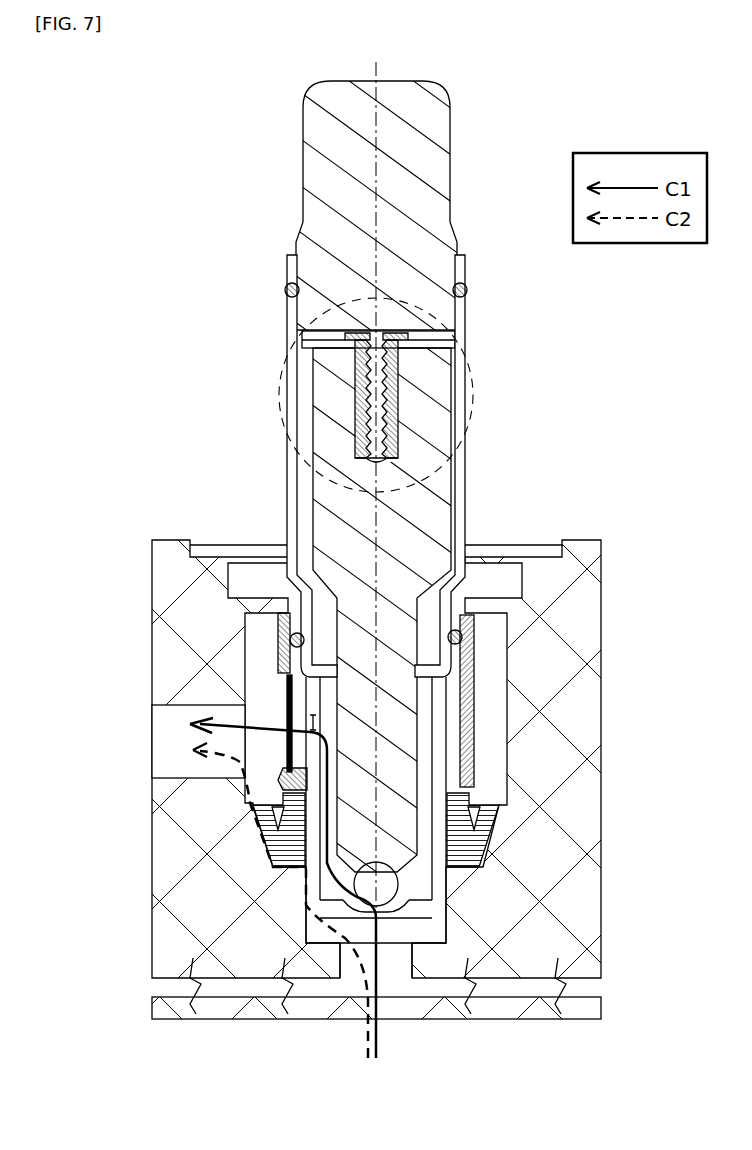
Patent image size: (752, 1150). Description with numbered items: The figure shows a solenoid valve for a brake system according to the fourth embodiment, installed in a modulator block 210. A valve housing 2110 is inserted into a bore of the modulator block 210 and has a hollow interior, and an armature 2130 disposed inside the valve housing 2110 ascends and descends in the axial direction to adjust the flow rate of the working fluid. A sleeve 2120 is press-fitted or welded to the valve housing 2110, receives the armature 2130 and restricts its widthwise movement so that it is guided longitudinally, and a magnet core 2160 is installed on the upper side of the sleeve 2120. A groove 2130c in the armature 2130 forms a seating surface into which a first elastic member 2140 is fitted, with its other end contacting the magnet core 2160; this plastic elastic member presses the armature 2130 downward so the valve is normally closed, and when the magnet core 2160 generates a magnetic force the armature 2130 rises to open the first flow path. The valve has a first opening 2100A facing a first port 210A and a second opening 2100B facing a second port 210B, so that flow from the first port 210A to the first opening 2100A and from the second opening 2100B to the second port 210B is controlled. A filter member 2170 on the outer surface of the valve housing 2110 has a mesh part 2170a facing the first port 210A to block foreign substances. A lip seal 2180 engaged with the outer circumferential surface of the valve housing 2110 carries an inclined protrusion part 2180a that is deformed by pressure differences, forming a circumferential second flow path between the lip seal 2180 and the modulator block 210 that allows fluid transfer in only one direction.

The modulator block 210 is at (590, 600).
The first port 210A is at (178, 758).
The second port 210B is at (397, 965).
The first opening 2100A is at (313, 722).
The second opening 2100B is at (387, 908).
The valve housing 2110 is at (438, 873).
The sleeve 2120 is at (460, 322).
The armature 2130 is at (438, 493).
The groove 2130c is at (360, 407).
The first elastic member 2140 is at (353, 338).
The magnet core 2160 is at (442, 157).
The filter member 2170 is at (278, 635).
The mesh part 2170a is at (288, 683).
The lip seal 2180 is at (280, 857).
The inclined protrusion part 2180a is at (263, 820).